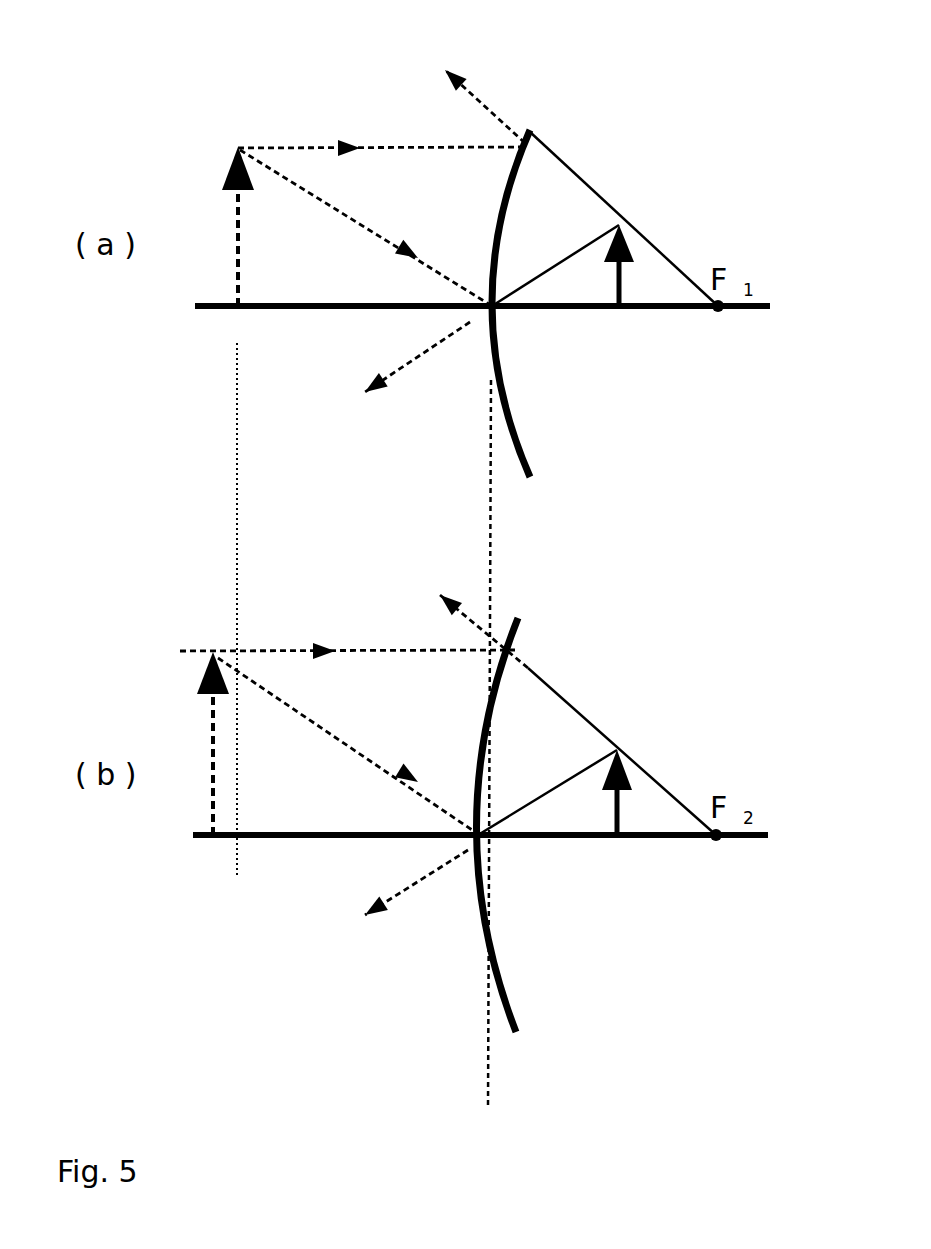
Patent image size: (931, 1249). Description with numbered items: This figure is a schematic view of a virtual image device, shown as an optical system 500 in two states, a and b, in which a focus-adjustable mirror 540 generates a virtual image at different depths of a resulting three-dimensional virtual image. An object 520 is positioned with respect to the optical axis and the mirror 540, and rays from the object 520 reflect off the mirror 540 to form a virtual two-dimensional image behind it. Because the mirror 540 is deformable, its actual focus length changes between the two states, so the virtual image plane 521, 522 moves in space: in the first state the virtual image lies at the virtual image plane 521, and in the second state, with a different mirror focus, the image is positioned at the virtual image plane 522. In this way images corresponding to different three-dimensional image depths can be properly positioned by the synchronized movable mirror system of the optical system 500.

The optical system 500 is at (122, 153).
The object 520 is at (645, 537).
The virtual image plane 521 is at (269, 522).
The virtual image plane 522 is at (187, 774).
The mirror 540 is at (540, 589).